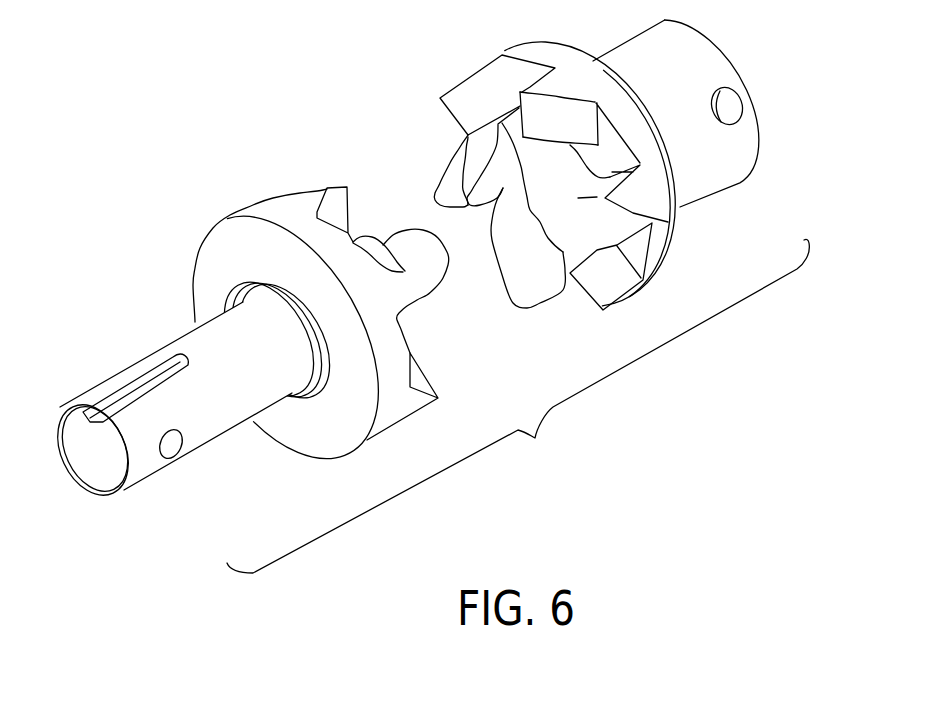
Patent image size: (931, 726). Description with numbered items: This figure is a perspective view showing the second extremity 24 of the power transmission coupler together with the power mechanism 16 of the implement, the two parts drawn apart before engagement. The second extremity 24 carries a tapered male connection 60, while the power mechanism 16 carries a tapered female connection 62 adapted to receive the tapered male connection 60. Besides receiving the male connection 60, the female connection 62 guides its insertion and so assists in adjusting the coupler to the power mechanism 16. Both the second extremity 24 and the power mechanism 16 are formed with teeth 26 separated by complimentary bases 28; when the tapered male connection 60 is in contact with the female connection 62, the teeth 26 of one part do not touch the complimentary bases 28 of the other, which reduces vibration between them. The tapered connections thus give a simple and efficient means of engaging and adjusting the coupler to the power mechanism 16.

The power mechanism 16 is at (712, 50).
The second extremity 24 is at (268, 207).
The teeth 26 is at (336, 192).
The complimentary bases 28 is at (411, 351).
The tapered male connection 60 is at (362, 238).
The tapered female connection 62 is at (574, 221).